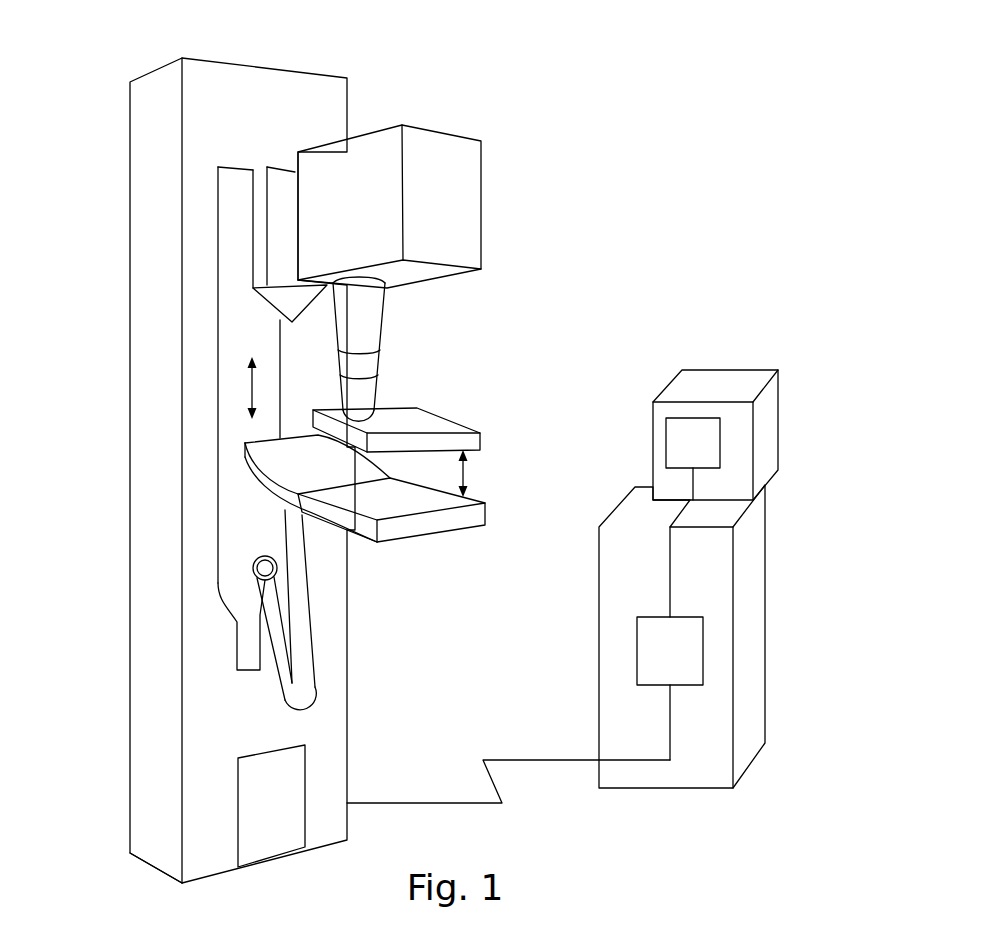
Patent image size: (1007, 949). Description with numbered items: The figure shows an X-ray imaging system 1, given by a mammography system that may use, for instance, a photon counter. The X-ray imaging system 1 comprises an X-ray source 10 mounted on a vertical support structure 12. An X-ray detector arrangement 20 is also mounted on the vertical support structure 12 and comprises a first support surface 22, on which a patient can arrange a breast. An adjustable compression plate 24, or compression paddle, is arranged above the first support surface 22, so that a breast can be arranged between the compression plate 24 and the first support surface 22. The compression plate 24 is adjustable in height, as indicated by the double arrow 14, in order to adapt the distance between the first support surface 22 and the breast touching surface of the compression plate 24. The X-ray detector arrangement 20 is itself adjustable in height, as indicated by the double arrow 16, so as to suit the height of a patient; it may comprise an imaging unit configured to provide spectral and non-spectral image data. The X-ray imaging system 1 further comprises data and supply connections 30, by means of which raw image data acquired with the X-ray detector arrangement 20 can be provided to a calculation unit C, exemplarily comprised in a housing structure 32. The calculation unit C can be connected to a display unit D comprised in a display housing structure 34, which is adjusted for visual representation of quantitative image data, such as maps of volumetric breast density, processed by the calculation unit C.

The X-ray imaging system 1 is at (630, 147).
The X-ray source 10 is at (482, 172).
The vertical support structure 12 is at (128, 598).
The double arrow 14 is at (467, 483).
The double arrow 16 is at (253, 405).
The X-ray detector arrangement 20 is at (402, 548).
The first support surface 22 is at (424, 508).
The compression plate 24 is at (473, 443).
The data and supply connections 30 is at (452, 803).
The housing structure 32 is at (713, 760).
The display housing structure 34 is at (709, 380).